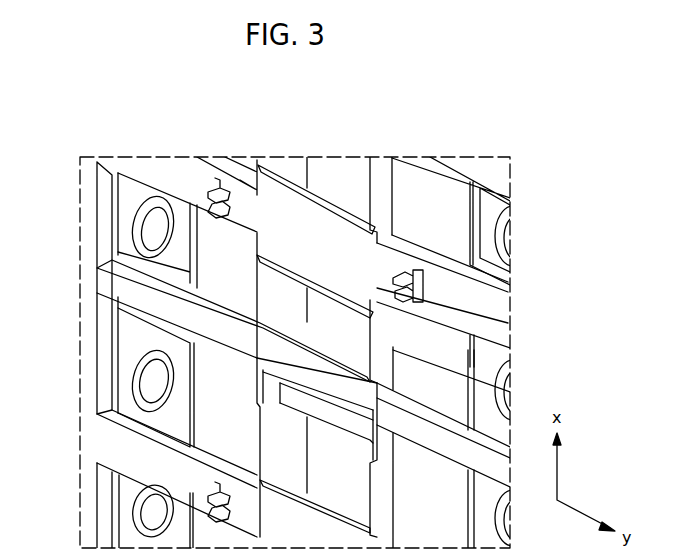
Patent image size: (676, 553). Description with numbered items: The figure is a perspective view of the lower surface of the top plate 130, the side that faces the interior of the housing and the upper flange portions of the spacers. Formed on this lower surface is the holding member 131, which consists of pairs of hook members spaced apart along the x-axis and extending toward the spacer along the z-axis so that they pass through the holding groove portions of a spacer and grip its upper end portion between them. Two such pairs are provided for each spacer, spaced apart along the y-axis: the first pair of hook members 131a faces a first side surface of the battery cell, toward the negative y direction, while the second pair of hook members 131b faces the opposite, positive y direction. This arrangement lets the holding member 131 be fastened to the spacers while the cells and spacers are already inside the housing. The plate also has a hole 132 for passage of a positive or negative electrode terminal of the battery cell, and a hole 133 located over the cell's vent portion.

The top plate 130 is at (225, 338).
The holding member 131 is at (363, 92).
The first pair of hook members 131a is at (214, 180).
The second pair of hook members 131b is at (398, 280).
The hole 132 is at (156, 388).
The hole 133 is at (500, 371).